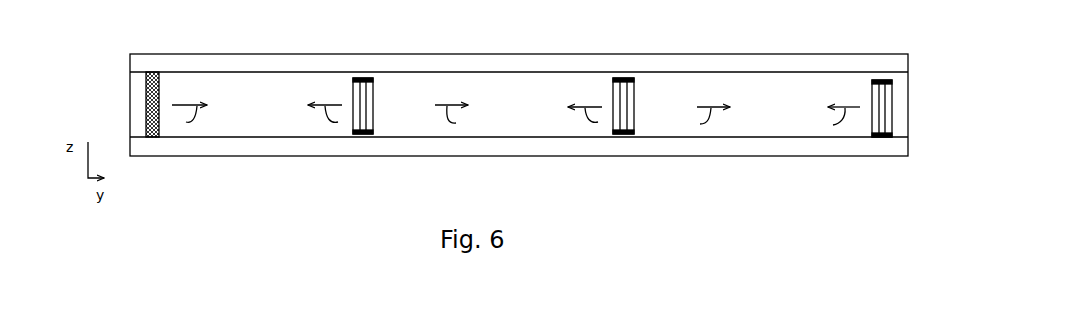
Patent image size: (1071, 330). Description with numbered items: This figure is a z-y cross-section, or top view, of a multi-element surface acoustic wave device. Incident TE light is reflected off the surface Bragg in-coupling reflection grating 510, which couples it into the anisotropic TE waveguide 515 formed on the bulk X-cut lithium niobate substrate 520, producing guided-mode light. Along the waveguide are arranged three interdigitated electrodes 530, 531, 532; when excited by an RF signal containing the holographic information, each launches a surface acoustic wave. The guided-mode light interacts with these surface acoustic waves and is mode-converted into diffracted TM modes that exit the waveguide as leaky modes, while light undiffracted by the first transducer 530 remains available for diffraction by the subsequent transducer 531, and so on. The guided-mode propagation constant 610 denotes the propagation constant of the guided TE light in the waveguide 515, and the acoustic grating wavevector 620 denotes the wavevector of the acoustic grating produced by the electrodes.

The surface Bragg in-coupling reflection grating 510 is at (153, 80).
The anisotropic waveguide 515 is at (140, 103).
The substrate 520 is at (140, 60).
The interdigitated electrode 530 is at (363, 78).
The interdigitated electrode 531 is at (624, 78).
The interdigitated electrode 532 is at (884, 80).
The guided-mode propagation constant 610 is at (451, 121).
The acoustic grating wavevector 620 is at (570, 121).